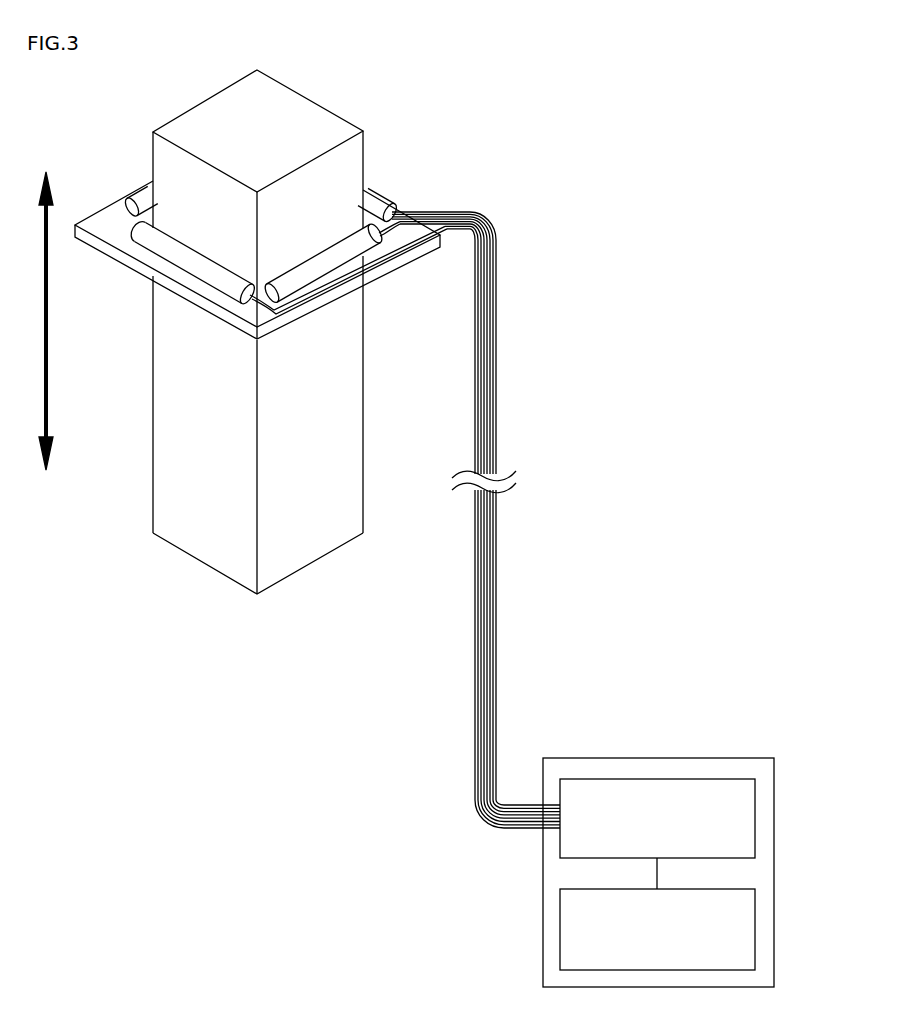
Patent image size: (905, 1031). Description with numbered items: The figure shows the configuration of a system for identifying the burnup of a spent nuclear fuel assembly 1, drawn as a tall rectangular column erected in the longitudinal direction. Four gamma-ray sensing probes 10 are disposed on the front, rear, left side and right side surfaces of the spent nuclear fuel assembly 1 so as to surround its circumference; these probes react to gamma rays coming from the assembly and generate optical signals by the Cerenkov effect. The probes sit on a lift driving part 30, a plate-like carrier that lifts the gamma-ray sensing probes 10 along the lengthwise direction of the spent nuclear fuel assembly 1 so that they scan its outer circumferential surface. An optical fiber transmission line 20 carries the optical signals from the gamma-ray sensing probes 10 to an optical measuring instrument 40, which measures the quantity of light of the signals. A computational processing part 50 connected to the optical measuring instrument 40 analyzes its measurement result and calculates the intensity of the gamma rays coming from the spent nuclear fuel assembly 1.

The spent nuclear fuel assembly 1 is at (352, 433).
The gamma-ray sensing probe 10 is at (140, 202).
The optical fiber transmission line 20 is at (497, 543).
The lift driving part 30 is at (190, 297).
The optical measuring instrument 40 is at (755, 815).
The computational processing part 50 is at (755, 917).